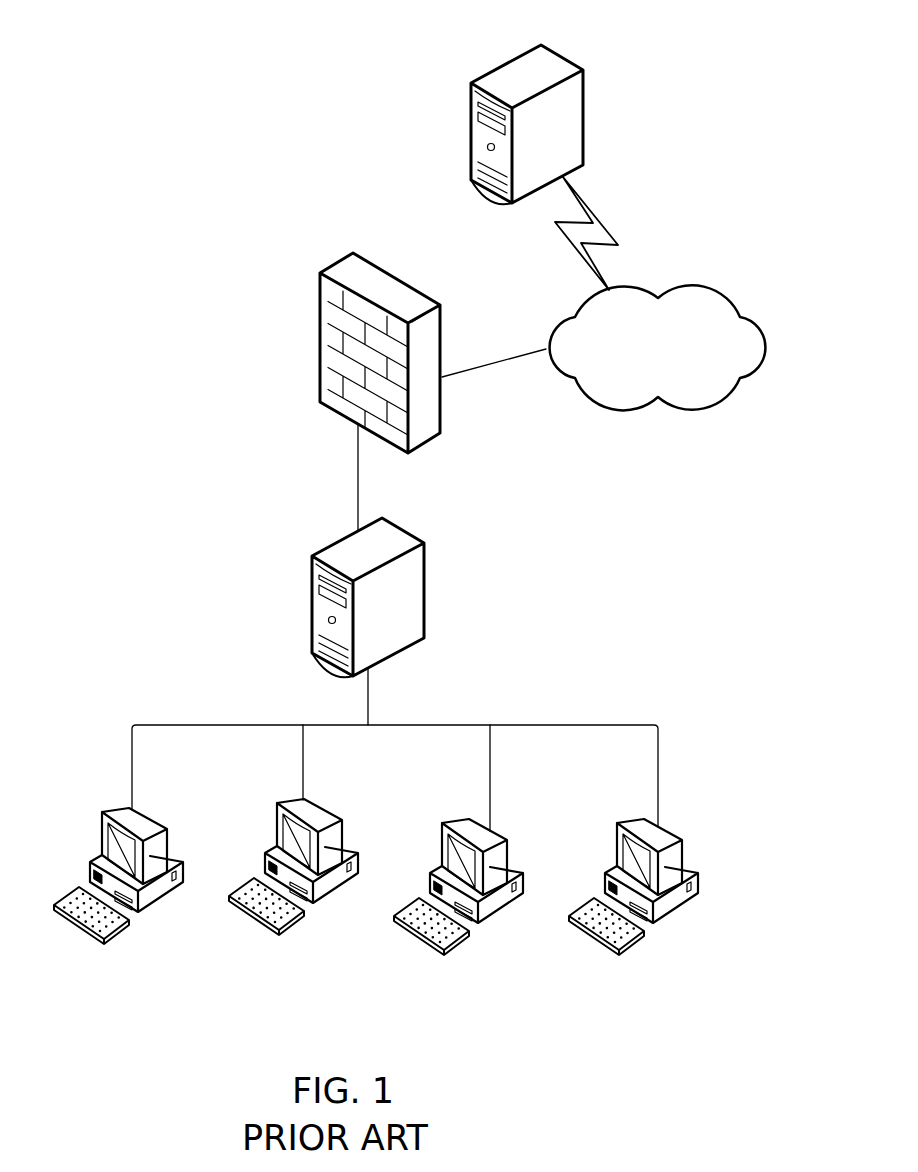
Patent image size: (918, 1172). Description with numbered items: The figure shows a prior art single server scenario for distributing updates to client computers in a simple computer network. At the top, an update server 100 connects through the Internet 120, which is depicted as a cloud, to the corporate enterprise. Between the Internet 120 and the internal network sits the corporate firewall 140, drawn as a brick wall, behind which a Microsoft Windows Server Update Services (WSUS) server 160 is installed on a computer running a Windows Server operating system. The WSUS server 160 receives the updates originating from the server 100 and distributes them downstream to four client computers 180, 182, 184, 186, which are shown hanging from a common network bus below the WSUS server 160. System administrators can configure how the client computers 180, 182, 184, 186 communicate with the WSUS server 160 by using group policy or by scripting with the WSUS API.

The server 100 is at (585, 117).
The Internet 120 is at (715, 290).
The corporate firewall 140 is at (388, 273).
The WSUS server 160 is at (425, 592).
The client computer 180 is at (165, 857).
The client computer 182 is at (342, 852).
The client computer 184 is at (507, 868).
The client computer 186 is at (683, 870).